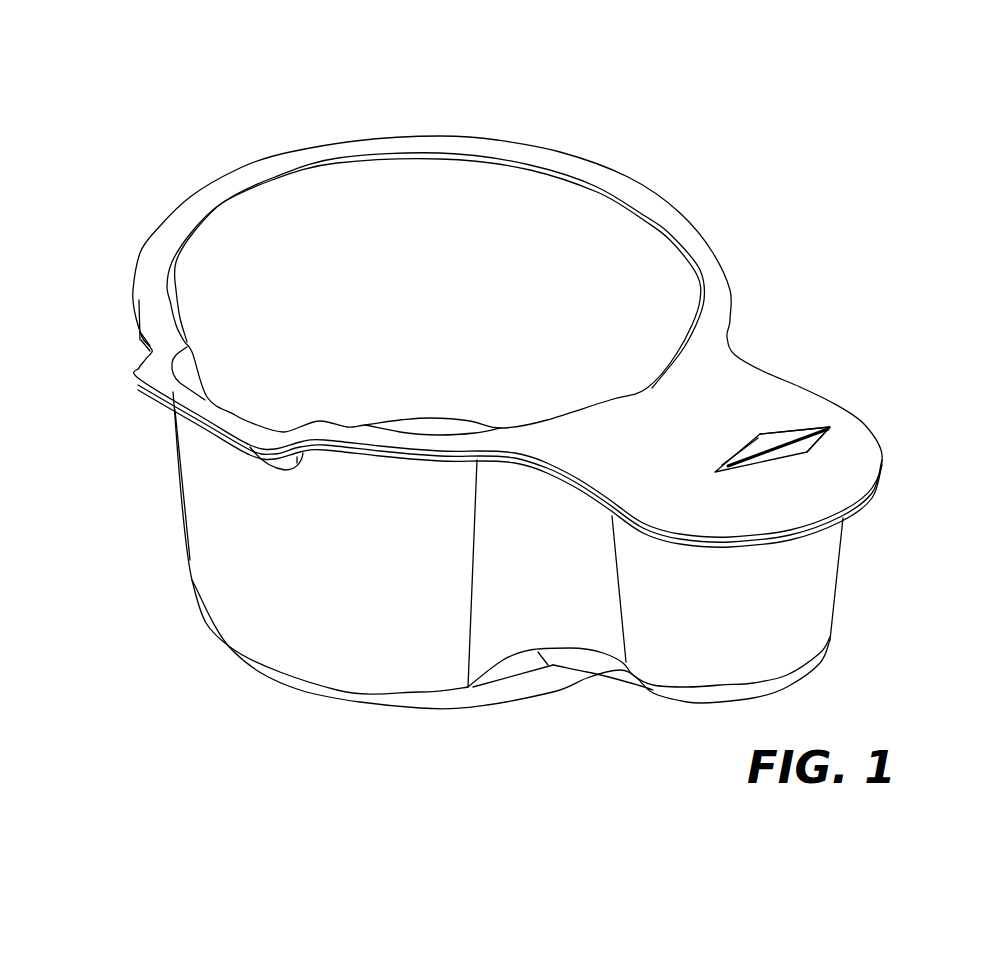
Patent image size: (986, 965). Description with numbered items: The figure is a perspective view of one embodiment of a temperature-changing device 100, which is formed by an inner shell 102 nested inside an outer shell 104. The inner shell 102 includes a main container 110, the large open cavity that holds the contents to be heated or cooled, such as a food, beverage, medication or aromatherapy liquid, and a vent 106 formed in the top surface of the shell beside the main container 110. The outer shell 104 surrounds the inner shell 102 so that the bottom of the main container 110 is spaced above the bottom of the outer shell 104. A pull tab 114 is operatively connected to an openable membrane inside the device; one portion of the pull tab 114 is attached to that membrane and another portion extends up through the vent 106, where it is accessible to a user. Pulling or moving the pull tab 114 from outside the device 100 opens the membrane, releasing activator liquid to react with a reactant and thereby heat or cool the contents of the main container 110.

The temperature-changing device 100 is at (108, 130).
The inner shell 102 is at (170, 391).
The outer shell 104 is at (202, 530).
The vent 106 is at (740, 440).
The main container 110 is at (431, 327).
The pull tab 114 is at (797, 433).